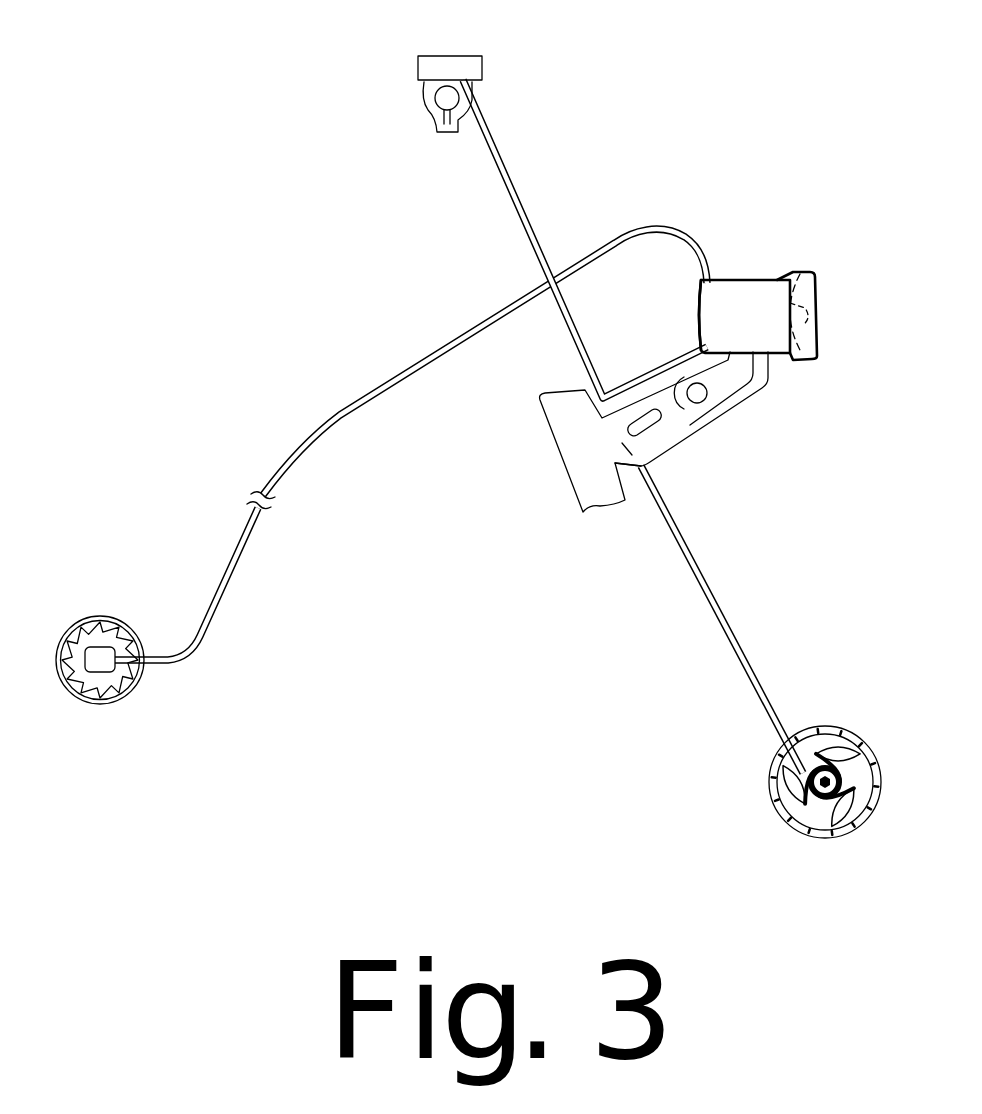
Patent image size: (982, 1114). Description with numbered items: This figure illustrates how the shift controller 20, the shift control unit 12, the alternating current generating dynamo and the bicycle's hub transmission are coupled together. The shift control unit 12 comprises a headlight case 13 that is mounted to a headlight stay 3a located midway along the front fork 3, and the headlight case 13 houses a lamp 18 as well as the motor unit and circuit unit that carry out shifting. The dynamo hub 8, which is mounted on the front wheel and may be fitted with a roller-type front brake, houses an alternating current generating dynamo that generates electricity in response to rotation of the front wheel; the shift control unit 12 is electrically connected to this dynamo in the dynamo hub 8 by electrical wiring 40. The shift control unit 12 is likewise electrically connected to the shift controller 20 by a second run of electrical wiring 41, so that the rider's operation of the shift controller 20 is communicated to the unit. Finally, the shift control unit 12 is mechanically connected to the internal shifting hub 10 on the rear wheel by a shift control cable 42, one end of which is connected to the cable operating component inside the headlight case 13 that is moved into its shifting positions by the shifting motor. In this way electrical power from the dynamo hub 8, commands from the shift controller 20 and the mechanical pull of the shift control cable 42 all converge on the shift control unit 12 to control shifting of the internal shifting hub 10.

The front fork 3 is at (575, 492).
The headlight stay 3a is at (645, 467).
The dynamo hub 8 is at (833, 725).
The internal shifting hub 10 is at (125, 690).
The shift control unit 12 is at (706, 281).
The headlight case 13 is at (743, 293).
The lamp 18 is at (823, 288).
The shift controller 20 is at (470, 66).
The electrical wiring 40 is at (720, 610).
The electrical wiring 41 is at (512, 185).
The shift control cable 42 is at (455, 345).